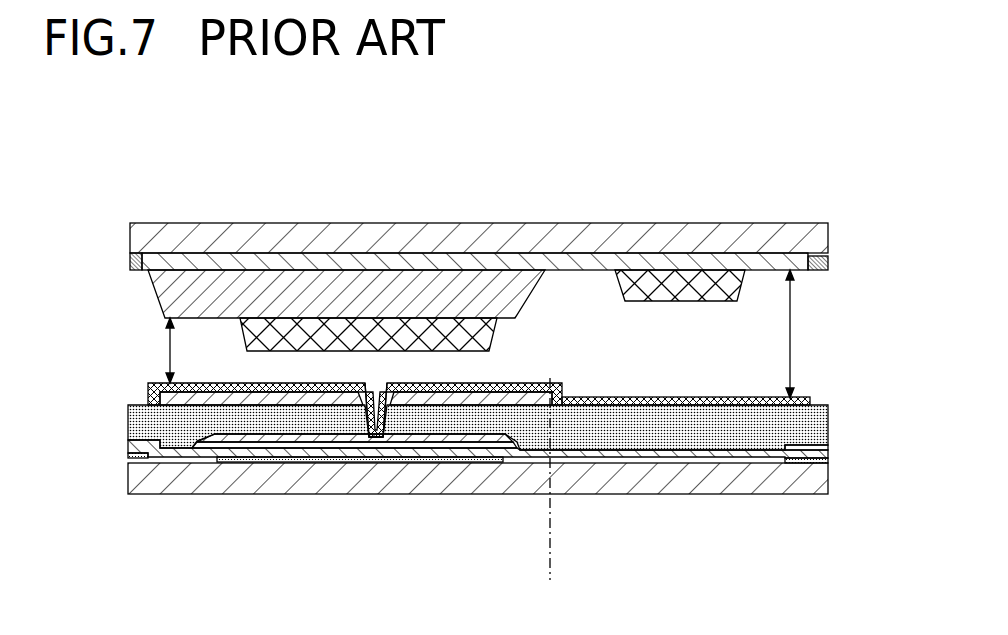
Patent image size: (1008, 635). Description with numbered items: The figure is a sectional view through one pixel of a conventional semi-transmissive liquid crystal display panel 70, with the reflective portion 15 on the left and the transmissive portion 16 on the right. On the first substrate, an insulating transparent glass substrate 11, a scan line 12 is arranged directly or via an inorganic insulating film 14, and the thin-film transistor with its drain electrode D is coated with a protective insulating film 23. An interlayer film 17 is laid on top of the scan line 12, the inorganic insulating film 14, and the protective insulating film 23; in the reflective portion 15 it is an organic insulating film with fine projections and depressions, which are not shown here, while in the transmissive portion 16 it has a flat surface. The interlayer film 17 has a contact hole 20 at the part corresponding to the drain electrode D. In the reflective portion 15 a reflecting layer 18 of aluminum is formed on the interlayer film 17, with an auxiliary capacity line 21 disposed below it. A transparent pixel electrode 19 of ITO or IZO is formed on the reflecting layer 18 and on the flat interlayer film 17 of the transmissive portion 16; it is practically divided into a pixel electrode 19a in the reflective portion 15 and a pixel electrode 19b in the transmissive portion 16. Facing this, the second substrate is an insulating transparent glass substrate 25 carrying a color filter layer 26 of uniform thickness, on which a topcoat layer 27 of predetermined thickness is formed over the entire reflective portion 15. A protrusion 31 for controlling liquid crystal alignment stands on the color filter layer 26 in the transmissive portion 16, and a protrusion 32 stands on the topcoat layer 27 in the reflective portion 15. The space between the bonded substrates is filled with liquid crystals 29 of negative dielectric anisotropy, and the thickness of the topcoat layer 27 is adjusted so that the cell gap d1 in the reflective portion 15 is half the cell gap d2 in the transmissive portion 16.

The semi-transmissive liquid crystal display panel 70 is at (144, 129).
The insulating transparent glass substrate 25 is at (285, 238).
The color filter layer 26 is at (716, 255).
The topcoat layer 27 is at (468, 298).
The protrusion 32 is at (272, 340).
The protrusion 31 is at (672, 290).
The liquid crystals 29 is at (764, 350).
The cell gap d1 is at (154, 350).
The cell gap d2 is at (808, 334).
The transparent pixel electrode 19 is at (479, 367).
The pixel electrode 19a is at (510, 385).
The pixel electrode 19b is at (686, 376).
The reflecting layer 18 is at (436, 399).
The interlayer film 17 is at (158, 418).
The auxiliary capacity line 21 is at (447, 458).
The contact hole 20 is at (371, 442).
The protective insulating film 23 is at (478, 490).
The inorganic insulating film 14 is at (685, 458).
The drain electrode D is at (308, 445).
The scan line 12 is at (131, 460).
The insulating transparent glass substrate 11 is at (256, 476).
The reflective portion 15 is at (548, 565).
The transmissive portion 16 is at (553, 565).